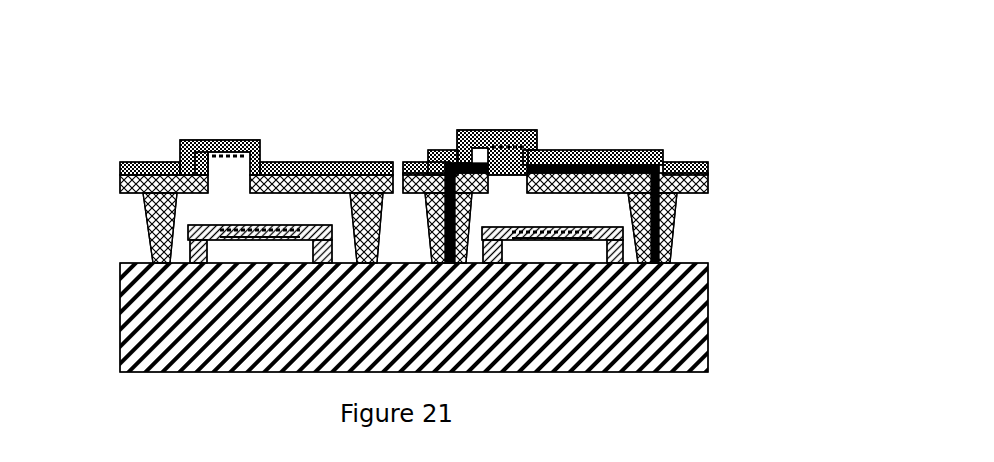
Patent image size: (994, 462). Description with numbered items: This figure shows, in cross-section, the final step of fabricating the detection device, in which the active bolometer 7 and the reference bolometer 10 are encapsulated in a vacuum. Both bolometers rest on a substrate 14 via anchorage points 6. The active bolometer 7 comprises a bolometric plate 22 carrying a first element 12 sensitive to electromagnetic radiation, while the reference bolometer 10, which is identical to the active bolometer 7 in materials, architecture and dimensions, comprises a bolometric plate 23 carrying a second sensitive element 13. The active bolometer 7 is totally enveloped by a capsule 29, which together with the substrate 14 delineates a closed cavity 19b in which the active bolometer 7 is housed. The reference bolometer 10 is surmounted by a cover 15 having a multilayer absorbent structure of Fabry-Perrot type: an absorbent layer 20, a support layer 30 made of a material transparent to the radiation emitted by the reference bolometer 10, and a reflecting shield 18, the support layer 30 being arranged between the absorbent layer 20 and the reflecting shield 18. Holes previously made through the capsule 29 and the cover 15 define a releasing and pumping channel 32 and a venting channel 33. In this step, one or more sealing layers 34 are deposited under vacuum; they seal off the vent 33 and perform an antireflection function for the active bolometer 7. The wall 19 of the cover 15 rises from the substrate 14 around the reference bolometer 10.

The anchorage points 6 is at (188, 249).
The active bolometer 7 is at (308, 196).
The reference bolometer 10 is at (598, 196).
The first element sensitive to electromagnetic radiation 12 is at (163, 262).
The second element sensitive to electromagnetic radiation 13 is at (662, 227).
The substrate 14 is at (678, 310).
The cover 15 is at (690, 143).
The reflecting shield 18 is at (553, 165).
The cap wall 19 is at (470, 228).
The closed cavity 19b is at (337, 217).
The absorbent layer 20 is at (587, 165).
The bolometric plate 22 is at (243, 225).
The bolometric plate 23 is at (667, 257).
The capsule 29 is at (347, 165).
The support layer 30 is at (490, 181).
The releasing and pumping channel 32 is at (243, 158).
The venting channel 33 is at (208, 150).
The sealing layers 34 is at (517, 133).